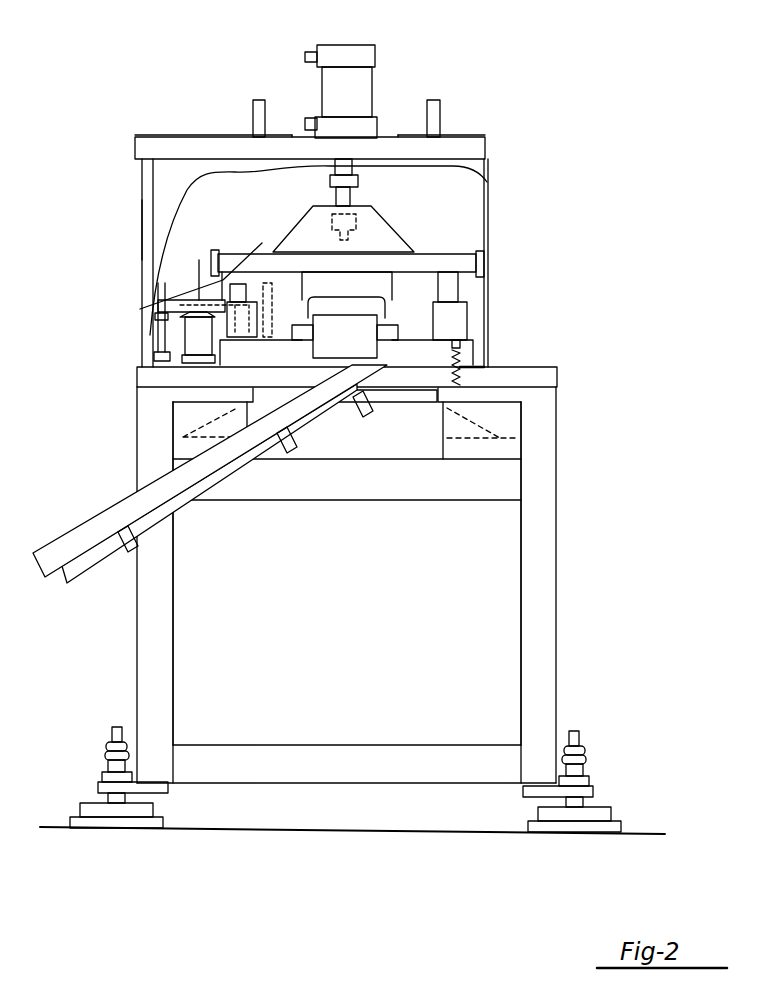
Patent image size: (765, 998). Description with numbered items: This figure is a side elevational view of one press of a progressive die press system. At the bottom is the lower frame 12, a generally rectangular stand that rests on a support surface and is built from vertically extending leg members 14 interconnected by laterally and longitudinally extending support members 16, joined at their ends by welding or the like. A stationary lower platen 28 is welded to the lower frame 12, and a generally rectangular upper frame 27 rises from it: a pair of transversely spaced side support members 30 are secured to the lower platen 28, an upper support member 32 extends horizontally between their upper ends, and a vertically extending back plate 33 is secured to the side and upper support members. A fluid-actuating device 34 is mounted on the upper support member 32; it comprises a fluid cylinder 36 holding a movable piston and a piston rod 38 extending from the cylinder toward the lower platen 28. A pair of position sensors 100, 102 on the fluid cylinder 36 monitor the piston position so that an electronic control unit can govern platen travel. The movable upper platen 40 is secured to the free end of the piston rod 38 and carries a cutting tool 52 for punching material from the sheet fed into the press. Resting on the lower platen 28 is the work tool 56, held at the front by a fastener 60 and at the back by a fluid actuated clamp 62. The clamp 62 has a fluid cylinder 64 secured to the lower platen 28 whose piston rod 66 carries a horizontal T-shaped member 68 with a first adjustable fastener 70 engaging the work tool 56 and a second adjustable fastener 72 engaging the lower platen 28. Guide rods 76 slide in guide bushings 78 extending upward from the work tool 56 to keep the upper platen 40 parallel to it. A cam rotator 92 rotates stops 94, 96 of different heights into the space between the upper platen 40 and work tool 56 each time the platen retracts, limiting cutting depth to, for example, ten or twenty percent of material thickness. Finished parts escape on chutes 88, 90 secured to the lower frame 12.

The lower frame 12 is at (556, 593).
The leg members 14 is at (150, 678).
The support members 16 is at (462, 480).
The upper frame 27 is at (136, 208).
The lower platen 28 is at (560, 376).
The side support members 30 is at (184, 190).
The upper support member 32 is at (212, 138).
The back plate 33 is at (148, 237).
The fluid-actuating device 34 is at (377, 46).
The fluid cylinder 36 is at (360, 102).
The piston rod 38 is at (354, 182).
The upper platen 40 is at (440, 258).
The cutting tool 52 is at (362, 220).
The work tool 56 is at (462, 348).
The fastener 60 is at (470, 372).
The fluid actuated clamp 62 is at (168, 360).
The fluid cylinder 64 is at (190, 366).
The piston rod 66 is at (140, 309).
The T-shaped member 68 is at (240, 287).
The first adjustable fastener 70 is at (244, 340).
The second adjustable fastener 72 is at (156, 352).
The guide rods 76 is at (455, 288).
The guide bushings 78 is at (455, 323).
The chute 88 is at (362, 344).
The chute 90 is at (200, 462).
The cam rotator 92 is at (181, 273).
The stop 94 is at (300, 333).
The stop 96 is at (158, 304).
The position sensor 100 is at (306, 57).
The position sensor 102 is at (305, 125).